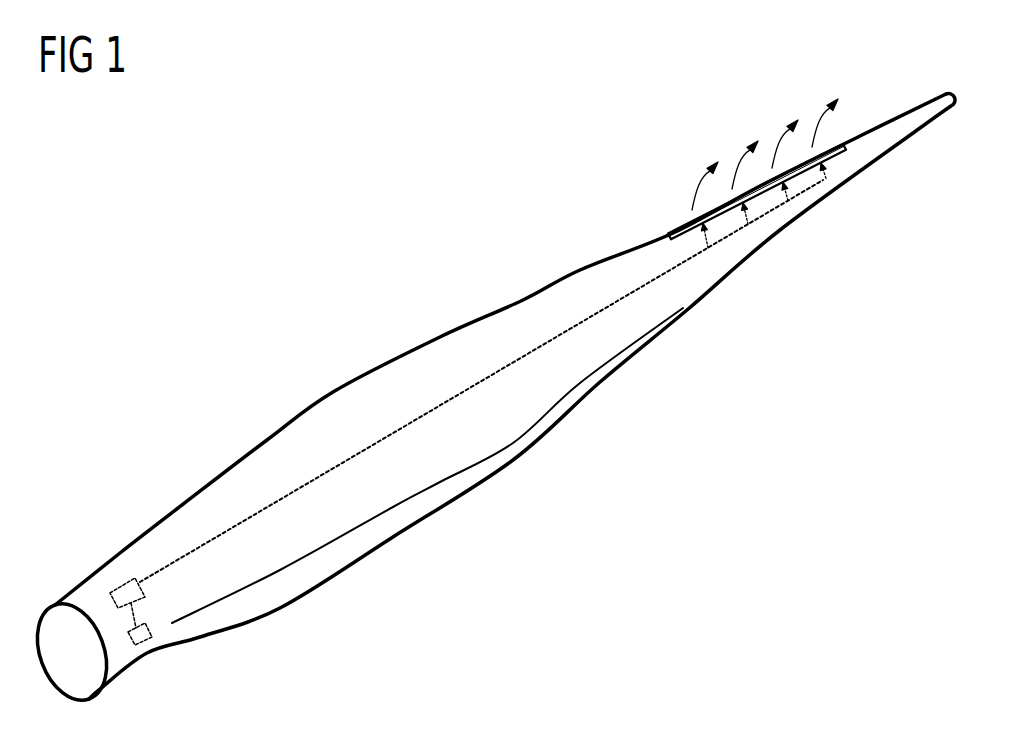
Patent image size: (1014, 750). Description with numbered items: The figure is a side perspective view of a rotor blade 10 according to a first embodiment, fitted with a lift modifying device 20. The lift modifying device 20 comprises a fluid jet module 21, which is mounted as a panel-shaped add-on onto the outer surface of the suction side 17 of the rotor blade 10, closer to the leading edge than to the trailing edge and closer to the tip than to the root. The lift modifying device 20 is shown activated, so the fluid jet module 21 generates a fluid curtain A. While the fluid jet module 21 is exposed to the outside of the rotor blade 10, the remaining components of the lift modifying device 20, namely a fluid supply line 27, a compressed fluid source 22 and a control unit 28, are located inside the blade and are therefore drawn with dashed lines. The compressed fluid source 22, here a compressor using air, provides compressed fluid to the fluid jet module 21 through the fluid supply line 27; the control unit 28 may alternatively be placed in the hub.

The rotor blade 10 is at (490, 402).
The suction side 17 is at (535, 310).
The lift modifying device 20 is at (716, 209).
The fluid jet module 21 is at (760, 197).
The compressed fluid source 22 is at (125, 587).
The fluid supply line 27 is at (390, 433).
The control unit 28 is at (147, 640).
The fluid curtain A is at (813, 143).